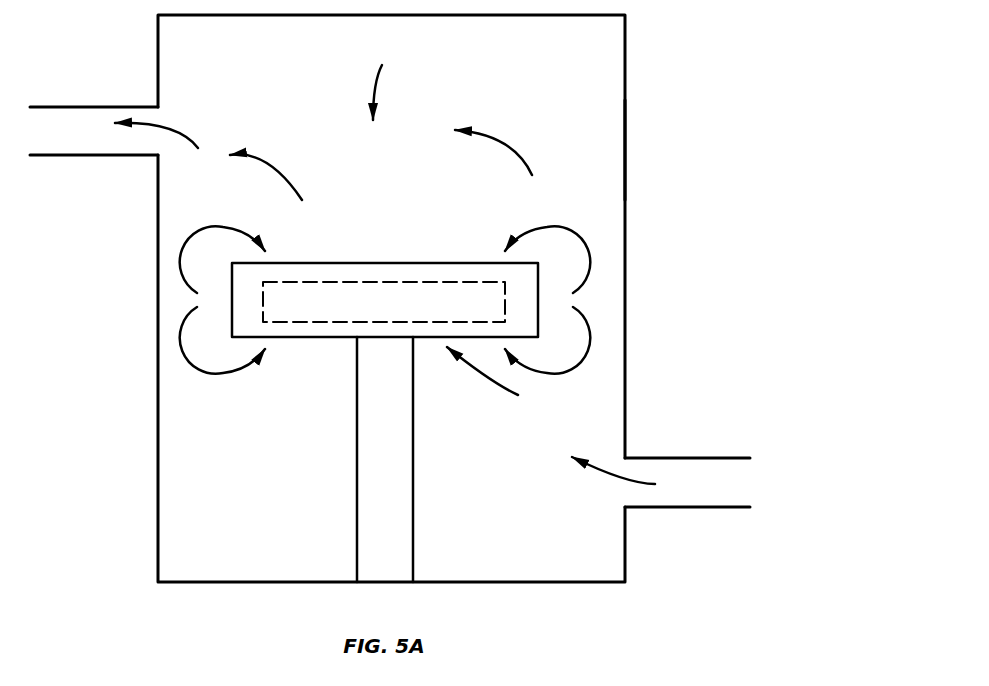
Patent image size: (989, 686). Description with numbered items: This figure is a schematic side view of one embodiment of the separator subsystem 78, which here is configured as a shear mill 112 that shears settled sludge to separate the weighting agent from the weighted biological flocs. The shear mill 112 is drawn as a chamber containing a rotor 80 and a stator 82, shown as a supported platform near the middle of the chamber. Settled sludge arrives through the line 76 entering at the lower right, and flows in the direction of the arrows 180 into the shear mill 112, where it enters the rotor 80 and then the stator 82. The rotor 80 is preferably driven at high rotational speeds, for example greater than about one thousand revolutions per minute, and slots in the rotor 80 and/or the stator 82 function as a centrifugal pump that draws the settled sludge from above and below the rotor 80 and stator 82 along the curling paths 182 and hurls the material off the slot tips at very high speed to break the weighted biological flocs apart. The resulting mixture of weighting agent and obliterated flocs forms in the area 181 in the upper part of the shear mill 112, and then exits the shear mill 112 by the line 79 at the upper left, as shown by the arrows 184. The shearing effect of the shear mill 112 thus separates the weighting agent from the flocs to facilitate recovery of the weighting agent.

The separator subsystem 78 is at (677, 29).
The line 79 is at (70, 107).
The line 76 is at (737, 458).
The shear mill 112 is at (638, 158).
The stator 82 is at (355, 263).
The rotor 80 is at (369, 310).
The paths 182 is at (207, 230).
The arrows 184 is at (173, 127).
The area 181 is at (388, 79).
The arrows 180 is at (473, 378).